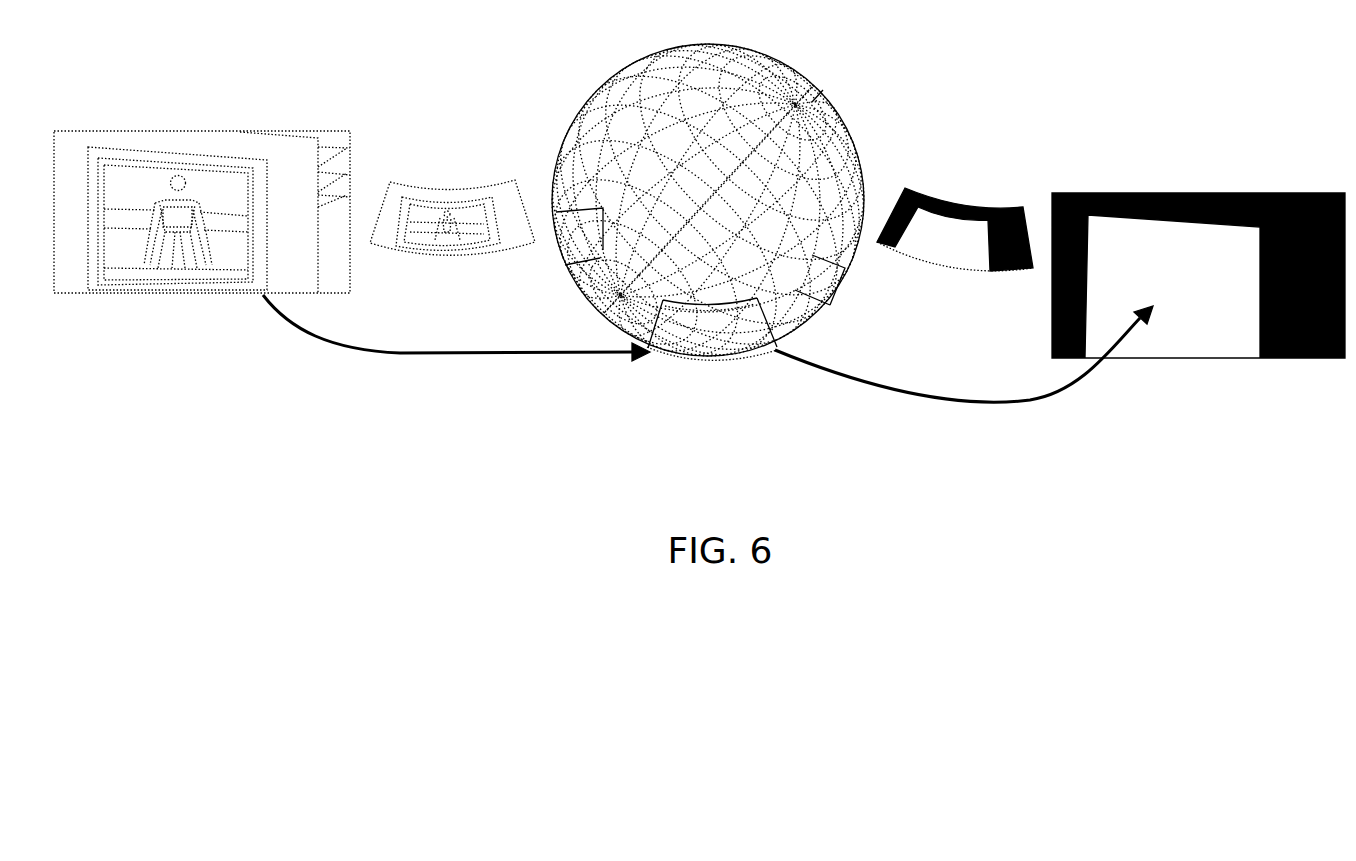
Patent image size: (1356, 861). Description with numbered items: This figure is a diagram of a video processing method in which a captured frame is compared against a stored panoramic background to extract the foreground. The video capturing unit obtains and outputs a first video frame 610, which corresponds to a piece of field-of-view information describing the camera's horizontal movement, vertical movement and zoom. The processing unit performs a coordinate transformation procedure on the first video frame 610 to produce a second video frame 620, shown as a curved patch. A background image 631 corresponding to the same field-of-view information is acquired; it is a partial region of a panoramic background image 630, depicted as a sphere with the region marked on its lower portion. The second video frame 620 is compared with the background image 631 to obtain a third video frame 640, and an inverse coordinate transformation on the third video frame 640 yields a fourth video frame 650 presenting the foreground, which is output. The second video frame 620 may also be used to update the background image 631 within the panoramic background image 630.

The first video frame 610 is at (272, 131).
The second video frame 620 is at (478, 188).
The panoramic background image 630 is at (795, 88).
The background image 631 is at (770, 347).
The third video frame 640 is at (985, 207).
The fourth video frame 650 is at (1220, 193).